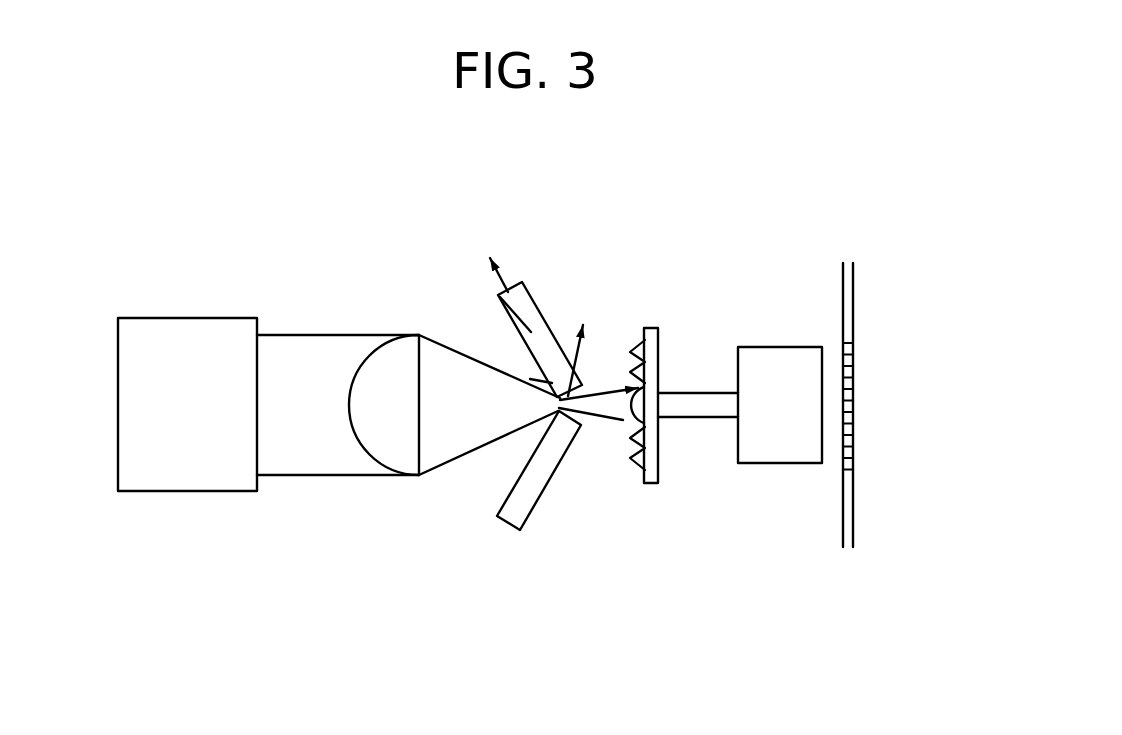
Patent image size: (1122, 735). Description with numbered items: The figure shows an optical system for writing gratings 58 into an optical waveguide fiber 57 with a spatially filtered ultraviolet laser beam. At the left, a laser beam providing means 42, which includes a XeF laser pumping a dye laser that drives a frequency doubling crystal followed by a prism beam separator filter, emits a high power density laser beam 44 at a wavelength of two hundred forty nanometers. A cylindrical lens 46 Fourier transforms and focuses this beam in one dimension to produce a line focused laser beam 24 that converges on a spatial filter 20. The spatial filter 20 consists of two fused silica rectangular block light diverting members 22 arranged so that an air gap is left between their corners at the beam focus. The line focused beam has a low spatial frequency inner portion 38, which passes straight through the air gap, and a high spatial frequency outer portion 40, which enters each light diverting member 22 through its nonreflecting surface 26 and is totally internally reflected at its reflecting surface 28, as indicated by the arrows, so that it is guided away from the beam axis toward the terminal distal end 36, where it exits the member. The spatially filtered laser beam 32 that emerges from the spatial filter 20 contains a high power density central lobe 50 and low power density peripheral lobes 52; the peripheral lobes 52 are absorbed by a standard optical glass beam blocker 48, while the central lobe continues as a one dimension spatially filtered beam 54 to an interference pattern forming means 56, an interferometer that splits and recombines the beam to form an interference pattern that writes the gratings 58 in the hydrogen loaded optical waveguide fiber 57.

The spatial filter 20 is at (538, 538).
The light diverting member 22 is at (547, 325).
The line focused laser beam 24 is at (422, 483).
The nonreflecting surface 26 is at (556, 397).
The reflecting surface 28 is at (578, 392).
The spatially filtered laser beam 32 is at (607, 437).
The terminal distal end 36 is at (516, 288).
The inner portion 38 is at (535, 401).
The outer portion 40 is at (540, 424).
The means for providing a high power density laser beam 42 is at (175, 420).
The high power density laser beam 44 is at (283, 500).
The cylindrical lens 46 is at (365, 450).
The beam blocker 48 is at (666, 348).
The central lobe 50 is at (637, 330).
The peripheral lobes 52 is at (623, 392).
The one dimension spatially filtered beam 54 is at (705, 378).
The means for forming an interference pattern 56 is at (771, 420).
The optical waveguide fiber 57 is at (866, 300).
The gratings 58 is at (874, 407).